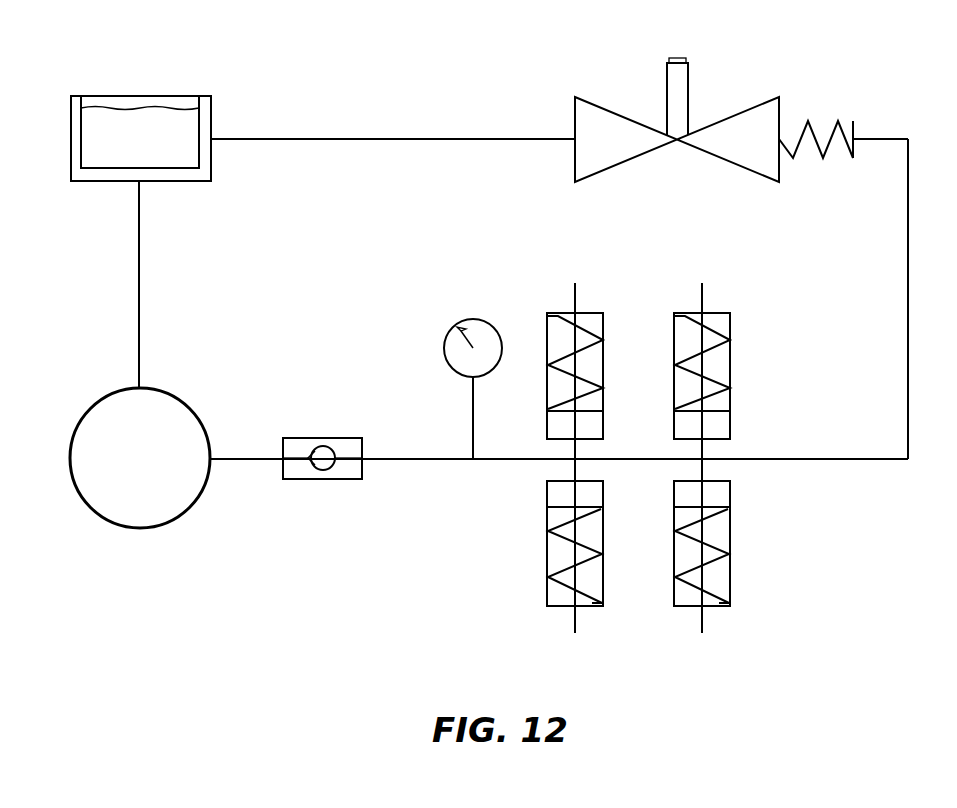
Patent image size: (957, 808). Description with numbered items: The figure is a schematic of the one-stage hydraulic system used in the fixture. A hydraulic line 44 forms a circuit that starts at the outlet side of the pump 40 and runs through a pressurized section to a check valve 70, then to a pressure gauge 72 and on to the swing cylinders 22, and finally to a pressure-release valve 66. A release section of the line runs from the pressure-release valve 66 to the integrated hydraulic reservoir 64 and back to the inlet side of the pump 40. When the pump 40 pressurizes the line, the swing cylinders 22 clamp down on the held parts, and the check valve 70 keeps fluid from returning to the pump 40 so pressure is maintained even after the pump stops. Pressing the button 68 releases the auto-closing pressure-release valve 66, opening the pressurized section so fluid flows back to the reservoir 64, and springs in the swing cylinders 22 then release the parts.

The swing cylinders 22 is at (731, 572).
The pump 40 is at (82, 418).
The hydraulic line 44 is at (365, 137).
The hydraulic reservoir 64 is at (104, 120).
The pressure-release valve 66 is at (587, 97).
The button 68 is at (678, 56).
The check valve 70 is at (337, 482).
The pressure gauge 72 is at (479, 316).